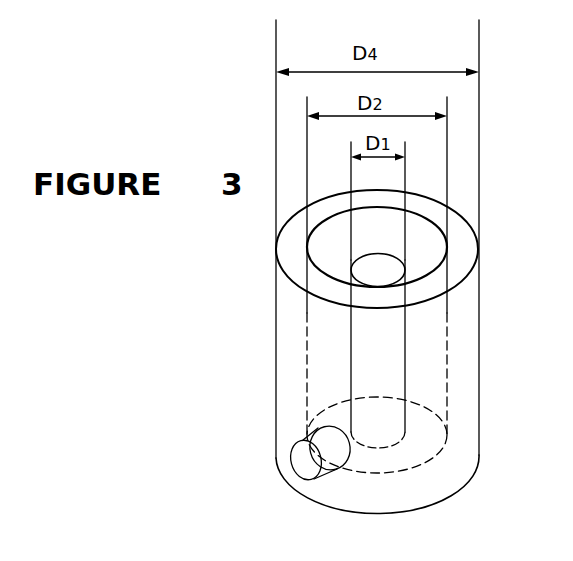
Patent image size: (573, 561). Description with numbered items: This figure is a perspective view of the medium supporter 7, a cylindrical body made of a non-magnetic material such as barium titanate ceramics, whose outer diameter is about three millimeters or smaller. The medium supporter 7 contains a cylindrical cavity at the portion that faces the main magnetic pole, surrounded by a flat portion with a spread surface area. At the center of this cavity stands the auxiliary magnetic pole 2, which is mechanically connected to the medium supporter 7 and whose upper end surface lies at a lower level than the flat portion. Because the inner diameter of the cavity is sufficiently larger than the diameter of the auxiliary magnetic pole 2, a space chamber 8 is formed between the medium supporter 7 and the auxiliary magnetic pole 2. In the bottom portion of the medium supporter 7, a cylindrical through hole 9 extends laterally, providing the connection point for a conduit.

The medium supporter 7 is at (465, 298).
The auxiliary magnetic pole 2 is at (395, 345).
The space chamber 8 is at (427, 377).
The through hole 9 is at (302, 460).